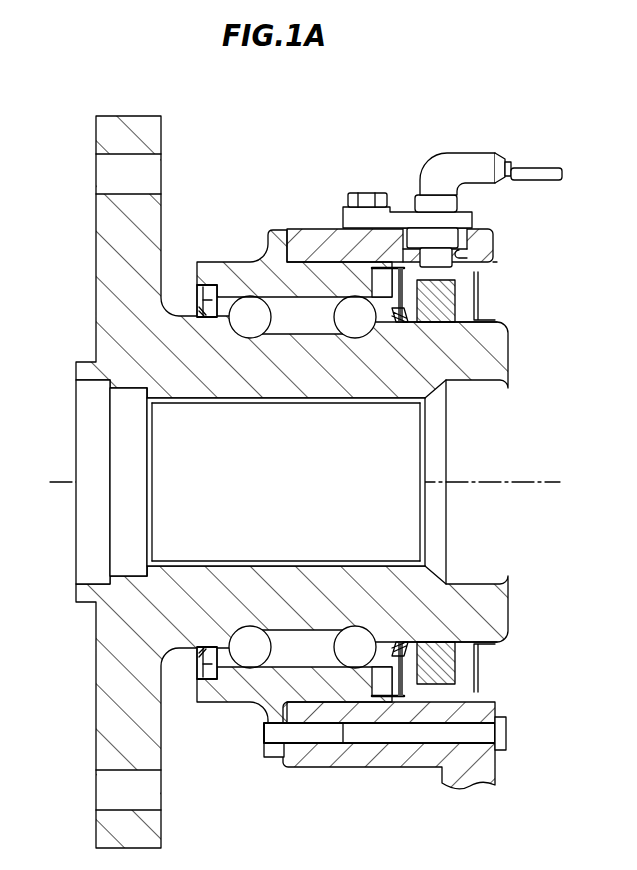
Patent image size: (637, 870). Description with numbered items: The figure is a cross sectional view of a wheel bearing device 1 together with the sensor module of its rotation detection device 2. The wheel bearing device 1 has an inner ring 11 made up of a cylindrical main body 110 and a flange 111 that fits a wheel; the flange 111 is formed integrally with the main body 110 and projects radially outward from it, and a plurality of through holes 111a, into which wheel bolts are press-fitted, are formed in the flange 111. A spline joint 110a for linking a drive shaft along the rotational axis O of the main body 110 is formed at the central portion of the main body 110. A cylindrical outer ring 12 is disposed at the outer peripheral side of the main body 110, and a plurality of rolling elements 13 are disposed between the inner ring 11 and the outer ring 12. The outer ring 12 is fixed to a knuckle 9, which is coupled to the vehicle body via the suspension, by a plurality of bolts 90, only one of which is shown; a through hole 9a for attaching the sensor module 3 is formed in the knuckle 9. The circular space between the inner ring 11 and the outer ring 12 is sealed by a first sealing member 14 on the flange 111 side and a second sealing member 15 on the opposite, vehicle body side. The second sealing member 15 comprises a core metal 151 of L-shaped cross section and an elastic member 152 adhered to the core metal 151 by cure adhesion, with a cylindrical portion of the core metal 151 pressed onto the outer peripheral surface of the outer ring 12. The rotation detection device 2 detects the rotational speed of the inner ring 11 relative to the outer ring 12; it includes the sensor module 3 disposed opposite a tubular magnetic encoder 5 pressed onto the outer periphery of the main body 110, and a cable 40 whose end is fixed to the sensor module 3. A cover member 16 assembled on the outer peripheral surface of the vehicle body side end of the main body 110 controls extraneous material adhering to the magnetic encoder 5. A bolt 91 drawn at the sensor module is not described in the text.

The wheel bearing device 1 is at (86, 103).
The rotation detection device 2 is at (480, 91).
The sensor module 3 is at (502, 141).
The cable 40 is at (517, 170).
The magnetic encoder 5 is at (456, 323).
The knuckle 9 is at (422, 232).
The through hole 9a is at (497, 256).
The inner ring 11 is at (32, 247).
The main body 110 is at (266, 482).
The spline joint 110a is at (255, 565).
The flange 111 is at (92, 482).
The through holes 111a is at (110, 193).
The outer ring 12 is at (273, 248).
The rolling elements 13 is at (243, 330).
The first sealing member 14 is at (200, 292).
The second sealing member 15 is at (372, 482).
The core metal 151 is at (392, 312).
The elastic member 152 is at (405, 270).
The cover member 16 is at (479, 308).
The bolts 90 is at (355, 736).
The sensor mounting bolt 91 is at (366, 200).
The rotational axis O is at (520, 480).